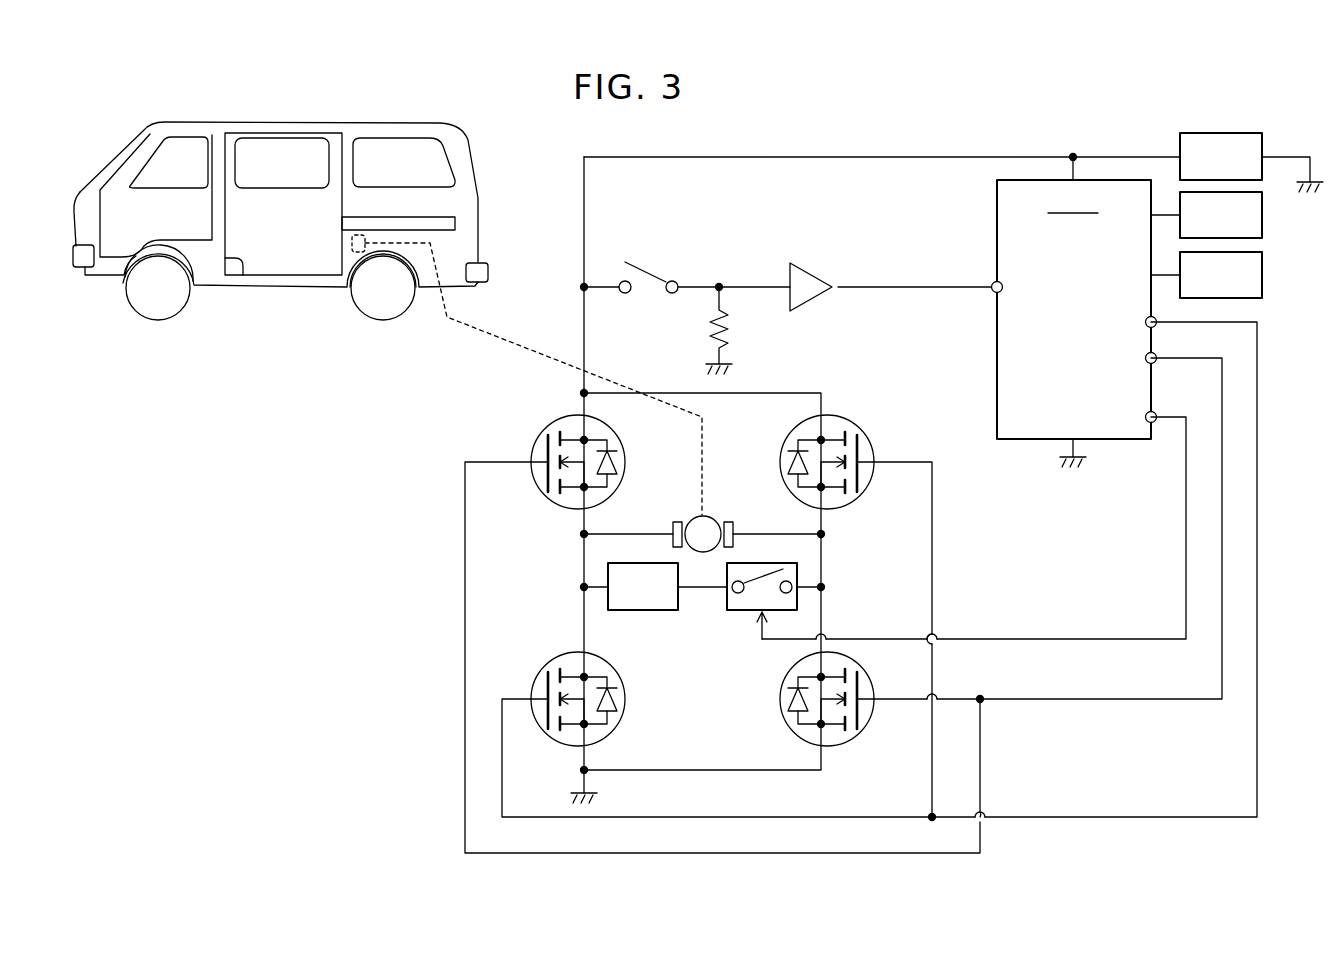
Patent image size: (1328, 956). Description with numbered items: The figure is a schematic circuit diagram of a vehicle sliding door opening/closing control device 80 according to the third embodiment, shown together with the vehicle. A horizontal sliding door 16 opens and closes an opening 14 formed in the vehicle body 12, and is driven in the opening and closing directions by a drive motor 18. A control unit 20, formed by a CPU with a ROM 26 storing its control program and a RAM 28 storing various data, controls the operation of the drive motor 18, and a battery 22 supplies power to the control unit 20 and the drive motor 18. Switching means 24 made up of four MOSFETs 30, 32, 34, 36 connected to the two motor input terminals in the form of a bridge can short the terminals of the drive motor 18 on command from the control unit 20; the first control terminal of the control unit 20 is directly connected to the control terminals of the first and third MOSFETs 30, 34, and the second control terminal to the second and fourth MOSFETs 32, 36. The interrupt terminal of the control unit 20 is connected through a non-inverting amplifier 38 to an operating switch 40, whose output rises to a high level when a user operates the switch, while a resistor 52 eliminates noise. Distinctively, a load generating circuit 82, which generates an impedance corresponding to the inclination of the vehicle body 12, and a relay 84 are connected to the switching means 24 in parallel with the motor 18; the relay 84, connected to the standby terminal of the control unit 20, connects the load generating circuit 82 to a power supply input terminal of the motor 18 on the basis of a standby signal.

The vehicle body 12 is at (355, 126).
The opening 14 is at (243, 268).
The sliding door 16 is at (283, 237).
The drive motor 18 is at (347, 241).
The control unit 20 is at (995, 216).
The battery 22 is at (1240, 133).
The switching means 24 is at (526, 420).
The ROM 26 is at (1263, 276).
The RAM 28 is at (1263, 216).
The first MOSFET 30 is at (568, 657).
The second MOSFET 32 is at (843, 740).
The third MOSFET 34 is at (843, 420).
The fourth MOSFET 36 is at (563, 500).
The non-inverting amplifier 38 is at (807, 273).
The operating switch 40 is at (643, 272).
The resistor 52 is at (705, 325).
The opening/closing control device 80 is at (893, 116).
The load generating circuit 82 is at (648, 610).
The relay 84 is at (743, 610).